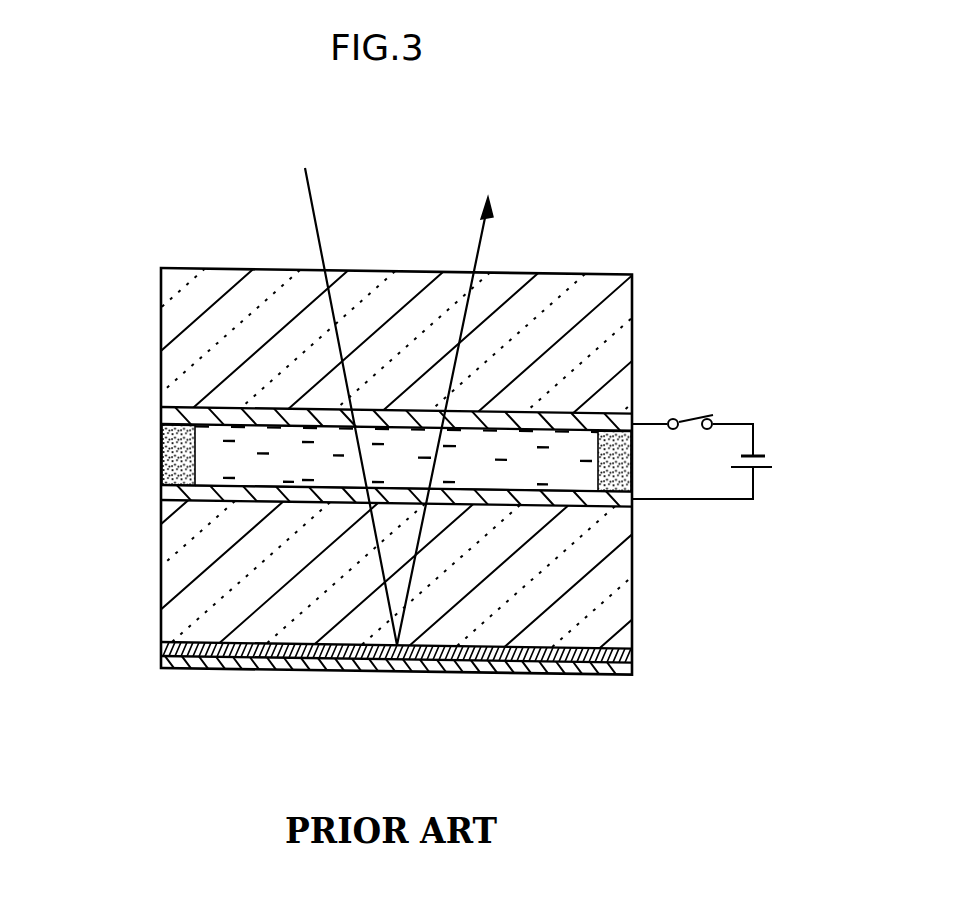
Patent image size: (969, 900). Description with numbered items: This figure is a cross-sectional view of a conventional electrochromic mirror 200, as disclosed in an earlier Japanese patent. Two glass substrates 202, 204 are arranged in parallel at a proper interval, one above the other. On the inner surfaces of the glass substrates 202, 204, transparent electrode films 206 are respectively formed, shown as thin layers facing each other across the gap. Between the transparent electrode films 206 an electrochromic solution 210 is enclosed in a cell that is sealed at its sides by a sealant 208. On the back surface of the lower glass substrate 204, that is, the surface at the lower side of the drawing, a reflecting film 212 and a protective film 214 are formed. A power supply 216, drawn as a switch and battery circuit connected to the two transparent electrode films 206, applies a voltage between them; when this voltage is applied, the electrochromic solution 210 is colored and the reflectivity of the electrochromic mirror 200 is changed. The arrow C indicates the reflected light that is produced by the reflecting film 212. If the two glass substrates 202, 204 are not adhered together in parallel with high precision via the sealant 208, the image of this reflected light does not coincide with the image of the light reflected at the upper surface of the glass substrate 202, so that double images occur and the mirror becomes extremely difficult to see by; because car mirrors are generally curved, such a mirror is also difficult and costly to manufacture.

The electrochromic mirror 200 is at (544, 189).
The glass substrate 202 is at (161, 298).
The glass substrate 204 is at (161, 528).
The transparent electrode film 206 is at (161, 413).
The sealant 208 is at (161, 426).
The electrochromic solution 210 is at (161, 459).
The reflecting film 212 is at (161, 645).
The protective film 214 is at (161, 663).
The power supply 216 is at (734, 403).
The arrow C is at (312, 224).